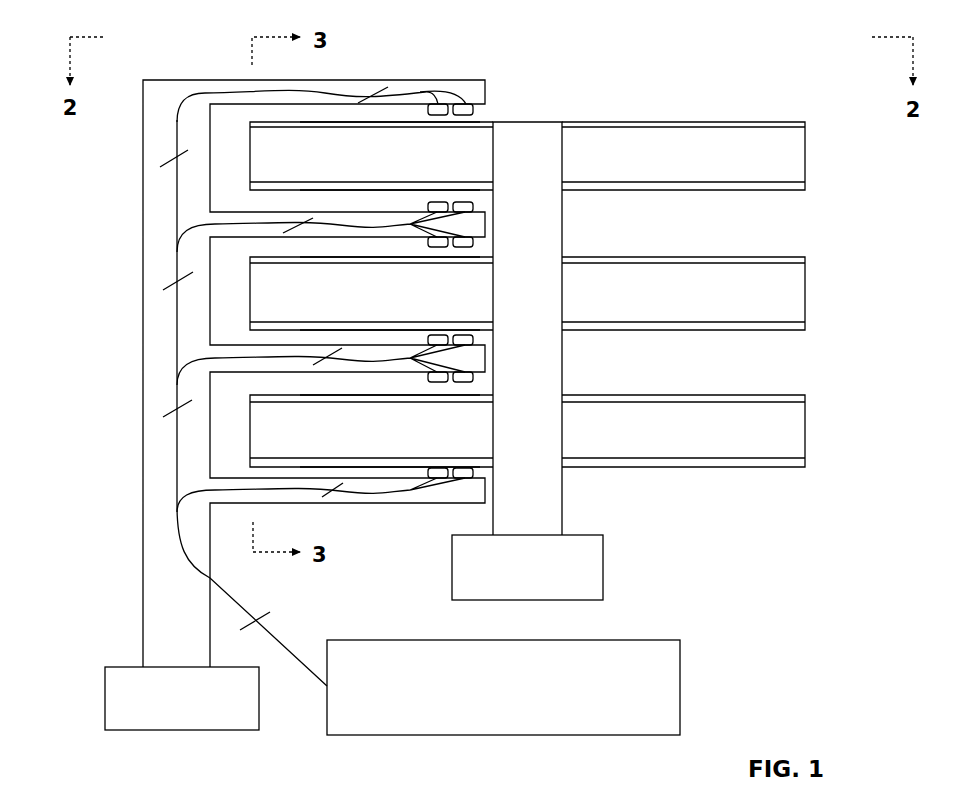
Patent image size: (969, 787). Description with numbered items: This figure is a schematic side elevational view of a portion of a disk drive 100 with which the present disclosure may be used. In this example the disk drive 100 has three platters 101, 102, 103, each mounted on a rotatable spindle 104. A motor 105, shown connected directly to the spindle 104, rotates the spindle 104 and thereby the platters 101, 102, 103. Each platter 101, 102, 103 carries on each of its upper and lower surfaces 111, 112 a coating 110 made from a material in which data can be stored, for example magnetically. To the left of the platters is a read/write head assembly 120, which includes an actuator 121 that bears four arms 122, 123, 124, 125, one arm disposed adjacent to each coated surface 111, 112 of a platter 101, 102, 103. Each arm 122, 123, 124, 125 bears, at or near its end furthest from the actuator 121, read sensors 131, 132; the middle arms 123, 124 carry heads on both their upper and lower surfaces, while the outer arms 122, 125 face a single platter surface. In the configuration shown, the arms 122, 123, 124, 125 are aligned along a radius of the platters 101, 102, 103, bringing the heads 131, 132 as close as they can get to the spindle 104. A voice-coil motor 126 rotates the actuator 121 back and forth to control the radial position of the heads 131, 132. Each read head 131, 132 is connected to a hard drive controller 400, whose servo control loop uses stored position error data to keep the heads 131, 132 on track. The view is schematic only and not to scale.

The disk drive 100 is at (183, 40).
The platter 101 is at (805, 156).
The platter 102 is at (805, 293).
The platter 103 is at (805, 431).
The spindle 104 is at (537, 128).
The motor 105 is at (603, 567).
The coating 110 is at (805, 122).
The upper surface 111 is at (640, 122).
The lower surface 112 is at (638, 191).
The read/write head assembly 120 is at (128, 198).
The actuator 121 is at (143, 300).
The arm 122 is at (313, 80).
The arm 123 is at (330, 212).
The arm 124 is at (330, 345).
The arm 125 is at (330, 478).
The voice-coil motor 126 is at (134, 667).
The read sensor 131 is at (468, 115).
The read sensor 132 is at (438, 115).
The hard drive controller 400 is at (393, 640).